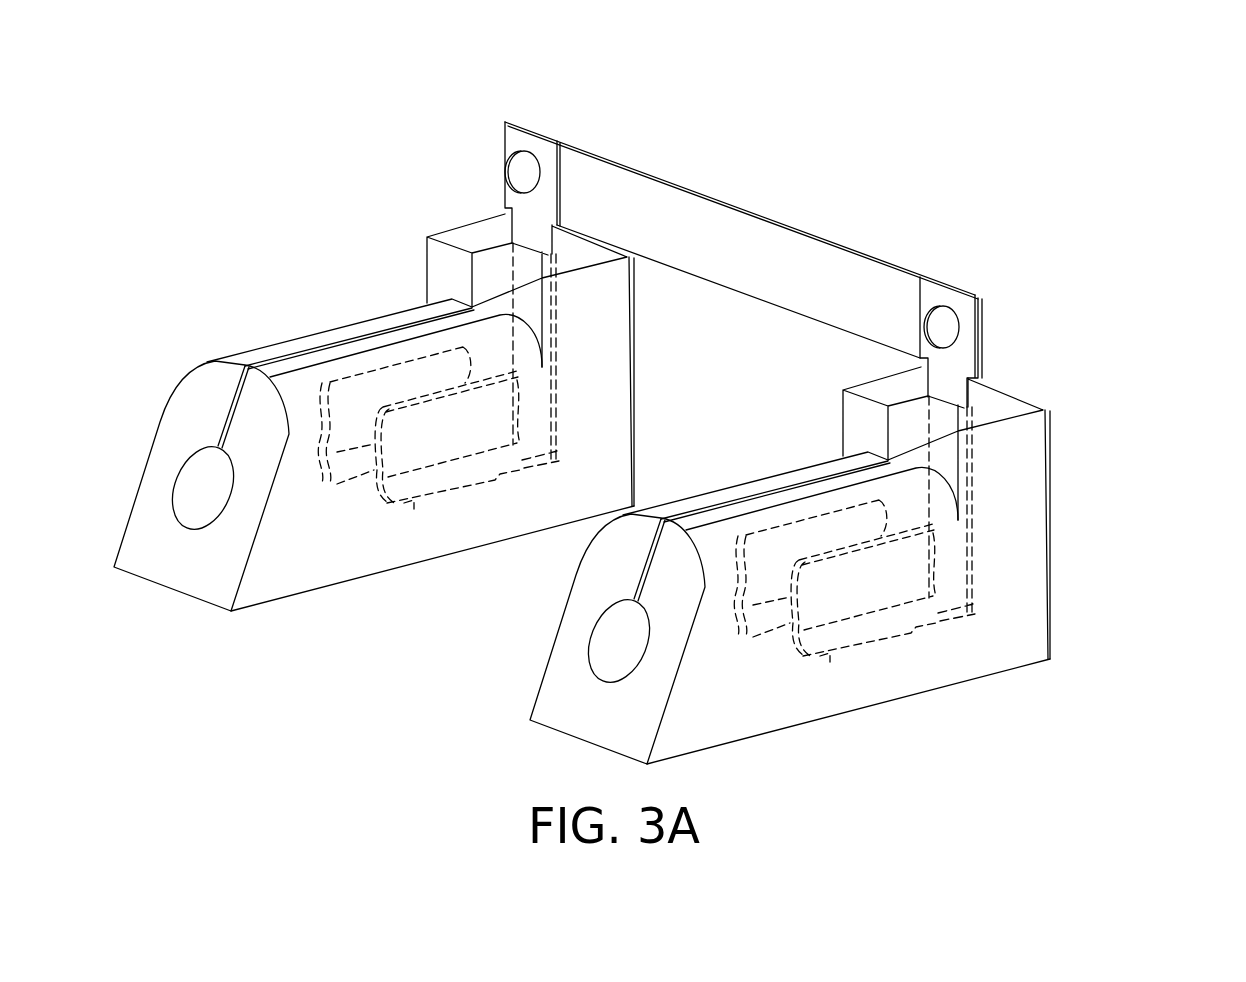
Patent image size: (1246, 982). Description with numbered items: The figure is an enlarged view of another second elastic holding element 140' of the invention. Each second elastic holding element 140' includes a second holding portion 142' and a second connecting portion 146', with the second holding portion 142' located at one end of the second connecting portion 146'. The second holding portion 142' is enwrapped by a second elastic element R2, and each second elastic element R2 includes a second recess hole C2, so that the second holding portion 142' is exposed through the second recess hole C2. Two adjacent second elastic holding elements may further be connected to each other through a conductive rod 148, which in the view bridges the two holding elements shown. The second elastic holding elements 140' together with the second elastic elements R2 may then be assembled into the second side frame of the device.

The conductive rod 148 is at (703, 208).
The second elastic holding element 140' is at (826, 565).
The second holding portion 142' is at (939, 581).
The second connecting portion 146' is at (1037, 508).
The second recess hole C2 is at (608, 650).
The second elastic element R2 is at (722, 492).